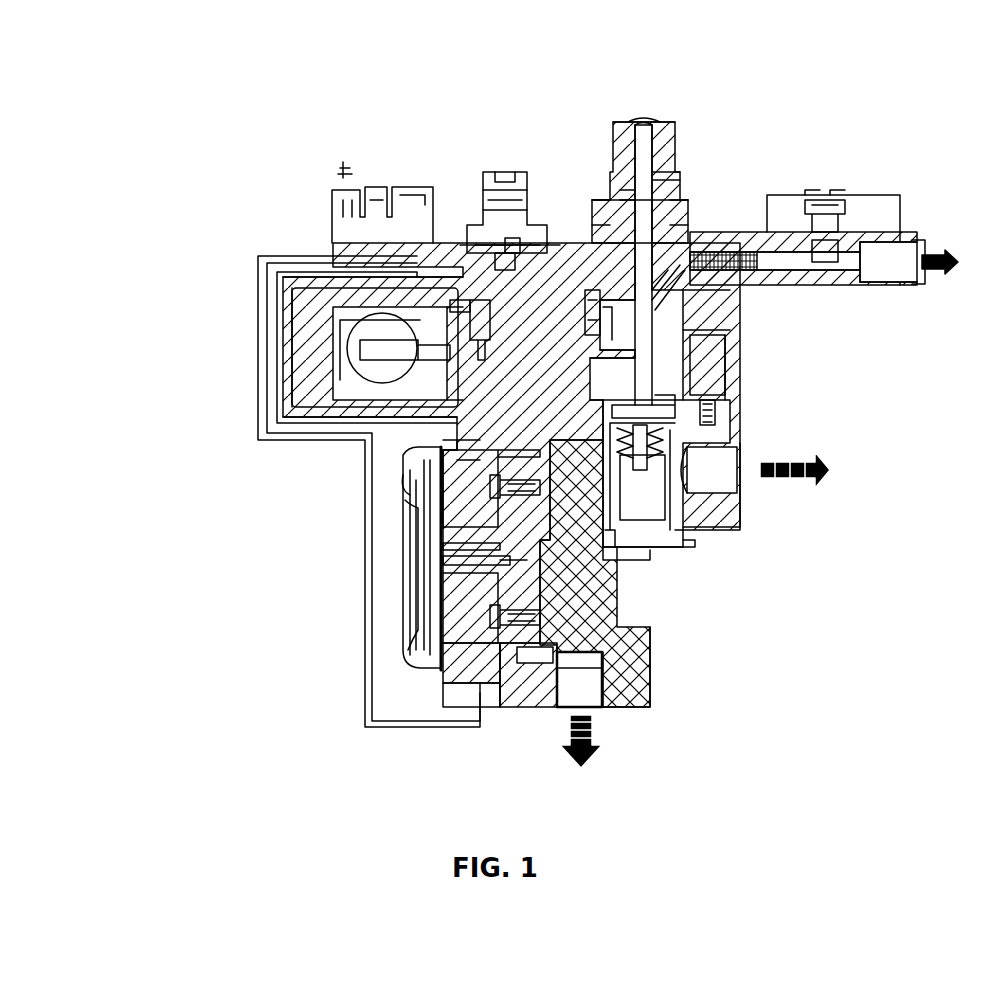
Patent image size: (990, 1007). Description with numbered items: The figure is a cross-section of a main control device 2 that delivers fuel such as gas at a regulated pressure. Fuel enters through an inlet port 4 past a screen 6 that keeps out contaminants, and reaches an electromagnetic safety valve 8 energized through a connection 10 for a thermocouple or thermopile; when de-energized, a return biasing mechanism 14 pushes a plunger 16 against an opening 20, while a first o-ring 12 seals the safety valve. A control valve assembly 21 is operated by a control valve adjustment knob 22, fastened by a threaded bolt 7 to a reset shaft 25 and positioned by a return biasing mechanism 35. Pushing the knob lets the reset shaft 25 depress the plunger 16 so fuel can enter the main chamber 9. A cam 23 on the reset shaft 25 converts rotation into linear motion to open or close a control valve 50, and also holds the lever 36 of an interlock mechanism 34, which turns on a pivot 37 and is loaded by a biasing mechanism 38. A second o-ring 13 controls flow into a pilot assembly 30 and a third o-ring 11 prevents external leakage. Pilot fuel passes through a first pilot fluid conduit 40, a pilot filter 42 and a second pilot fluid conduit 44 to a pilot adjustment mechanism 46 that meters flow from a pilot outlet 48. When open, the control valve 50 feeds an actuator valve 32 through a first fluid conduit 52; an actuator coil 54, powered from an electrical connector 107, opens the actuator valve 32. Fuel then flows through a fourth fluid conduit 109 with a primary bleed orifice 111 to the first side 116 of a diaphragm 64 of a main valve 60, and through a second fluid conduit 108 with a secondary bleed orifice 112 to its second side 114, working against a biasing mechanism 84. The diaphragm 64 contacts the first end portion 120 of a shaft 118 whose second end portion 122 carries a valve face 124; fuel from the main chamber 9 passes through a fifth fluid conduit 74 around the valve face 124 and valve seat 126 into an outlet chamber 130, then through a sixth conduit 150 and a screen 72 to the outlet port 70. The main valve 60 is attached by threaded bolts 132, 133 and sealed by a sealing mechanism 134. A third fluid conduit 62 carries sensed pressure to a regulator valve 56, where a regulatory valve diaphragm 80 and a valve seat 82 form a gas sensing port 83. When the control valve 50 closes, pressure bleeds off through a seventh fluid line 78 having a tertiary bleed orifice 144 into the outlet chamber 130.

The main control device 2 is at (690, 105).
The inlet port 4 is at (752, 444).
The screen 6 is at (702, 520).
The threaded bolt 7 is at (636, 126).
The electromagnetic safety valve 8 is at (630, 494).
The main chamber 9 is at (608, 389).
The connection 10 is at (640, 560).
The third o-ring 11 is at (630, 196).
The first o-ring 12 is at (620, 562).
The second o-ring 13 is at (655, 280).
The return biasing mechanism 14 is at (667, 440).
The plunger 16 is at (660, 404).
The opening 20 is at (750, 395).
The control valve assembly 21 is at (700, 148).
The control valve adjustment knob 22 is at (610, 125).
The cam 23 is at (617, 325).
The reset shaft 25 is at (641, 265).
The pilot assembly 30 is at (862, 287).
The actuator valve 32 is at (455, 300).
The interlock mechanism 34 is at (710, 356).
The return biasing mechanism 35 is at (675, 172).
The lever 36 is at (695, 330).
The pivot 37 is at (725, 365).
The biasing mechanism 38 is at (712, 418).
The first pilot fluid conduit 40 is at (660, 288).
The pilot filter 42 is at (722, 256).
The second pilot fluid conduit 44 is at (792, 262).
The pilot adjustment mechanism 46 is at (832, 212).
The pilot outlet 48 is at (886, 262).
The control valve 50 is at (468, 372).
The first fluid conduit 52 is at (452, 372).
The actuator coil 54 is at (395, 348).
The regulator valve 56 is at (488, 155).
The main valve 60 is at (432, 620).
The third fluid conduit 62 is at (262, 300).
The diaphragm 64 is at (430, 560).
The outlet port 70 is at (596, 697).
The screen 72 is at (556, 692).
The fifth fluid conduit 74 is at (655, 612).
The seventh fluid line 78 is at (592, 262).
The regulatory valve diaphragm 80 is at (492, 243).
The valve seat 82 is at (500, 262).
The gas sensing port 83 is at (540, 246).
The biasing mechanism 84 is at (425, 600).
The electrical connector 107 is at (374, 188).
The second fluid conduit 108 is at (452, 470).
The fourth fluid conduit 109 is at (300, 315).
The primary bleed orifice 111 is at (475, 308).
The secondary bleed orifice 112 is at (422, 438).
The second side 114 is at (450, 483).
The first side 116 is at (480, 527).
The shaft 118 is at (435, 605).
The first end portion 120 is at (470, 560).
The second end portion 122 is at (443, 622).
The valve face 124 is at (495, 577).
The valve seat 126 is at (652, 714).
The outlet chamber 130 is at (492, 672).
The threaded bolt 132 is at (440, 502).
The threaded bolt 133 is at (505, 647).
The sealing mechanism 134 is at (527, 600).
The tertiary bleed orifice 144 is at (430, 402).
The sixth conduit 150 is at (545, 675).